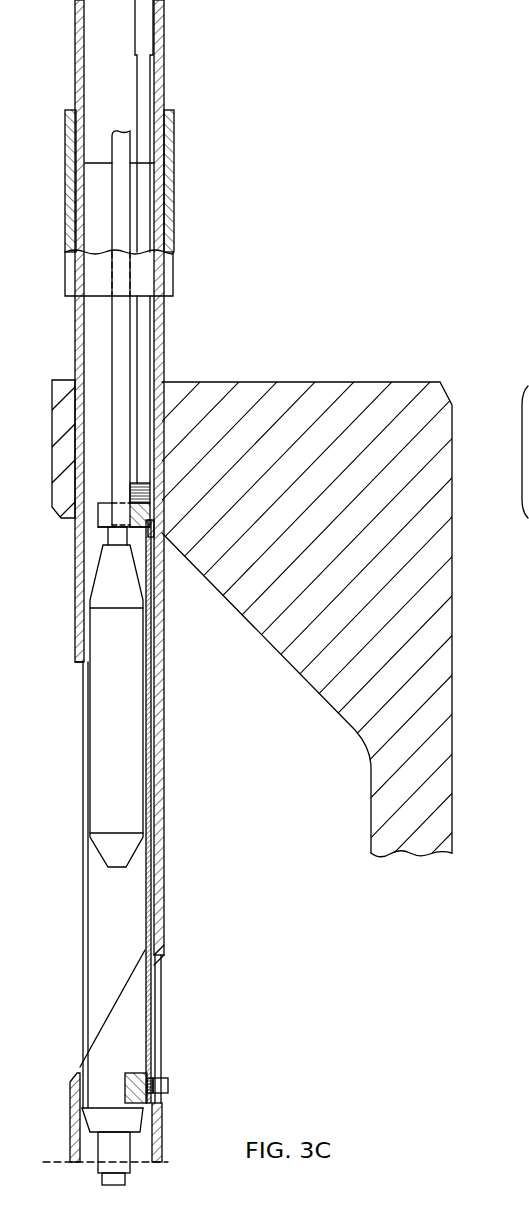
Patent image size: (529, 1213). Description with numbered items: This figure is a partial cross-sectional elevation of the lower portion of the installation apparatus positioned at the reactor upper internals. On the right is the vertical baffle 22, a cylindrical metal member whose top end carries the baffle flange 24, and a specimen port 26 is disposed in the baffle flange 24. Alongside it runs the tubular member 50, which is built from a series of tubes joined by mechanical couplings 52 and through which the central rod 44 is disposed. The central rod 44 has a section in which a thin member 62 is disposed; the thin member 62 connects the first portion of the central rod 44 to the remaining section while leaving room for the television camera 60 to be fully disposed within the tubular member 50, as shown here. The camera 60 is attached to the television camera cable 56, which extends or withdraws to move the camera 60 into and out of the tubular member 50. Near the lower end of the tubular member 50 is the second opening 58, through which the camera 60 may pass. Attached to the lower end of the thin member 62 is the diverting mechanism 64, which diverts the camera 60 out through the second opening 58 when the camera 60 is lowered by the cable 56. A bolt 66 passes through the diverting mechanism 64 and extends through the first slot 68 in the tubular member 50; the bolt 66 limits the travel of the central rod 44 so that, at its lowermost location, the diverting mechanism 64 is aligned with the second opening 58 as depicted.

The vertical baffle 22 is at (440, 815).
The baffle flange 24 is at (277, 393).
The specimen port 26 is at (162, 380).
The central rod 44 is at (145, 22).
The tubular member 50 is at (162, 72).
The mechanical coupling 52 is at (167, 173).
The television camera cable 56 is at (122, 348).
The second opening 58 is at (75, 1075).
The television camera 60 is at (123, 746).
The thin member 62 is at (147, 908).
The diverting mechanism 64 is at (118, 1032).
The bolt 66 is at (168, 1087).
The first slot 68 is at (158, 963).